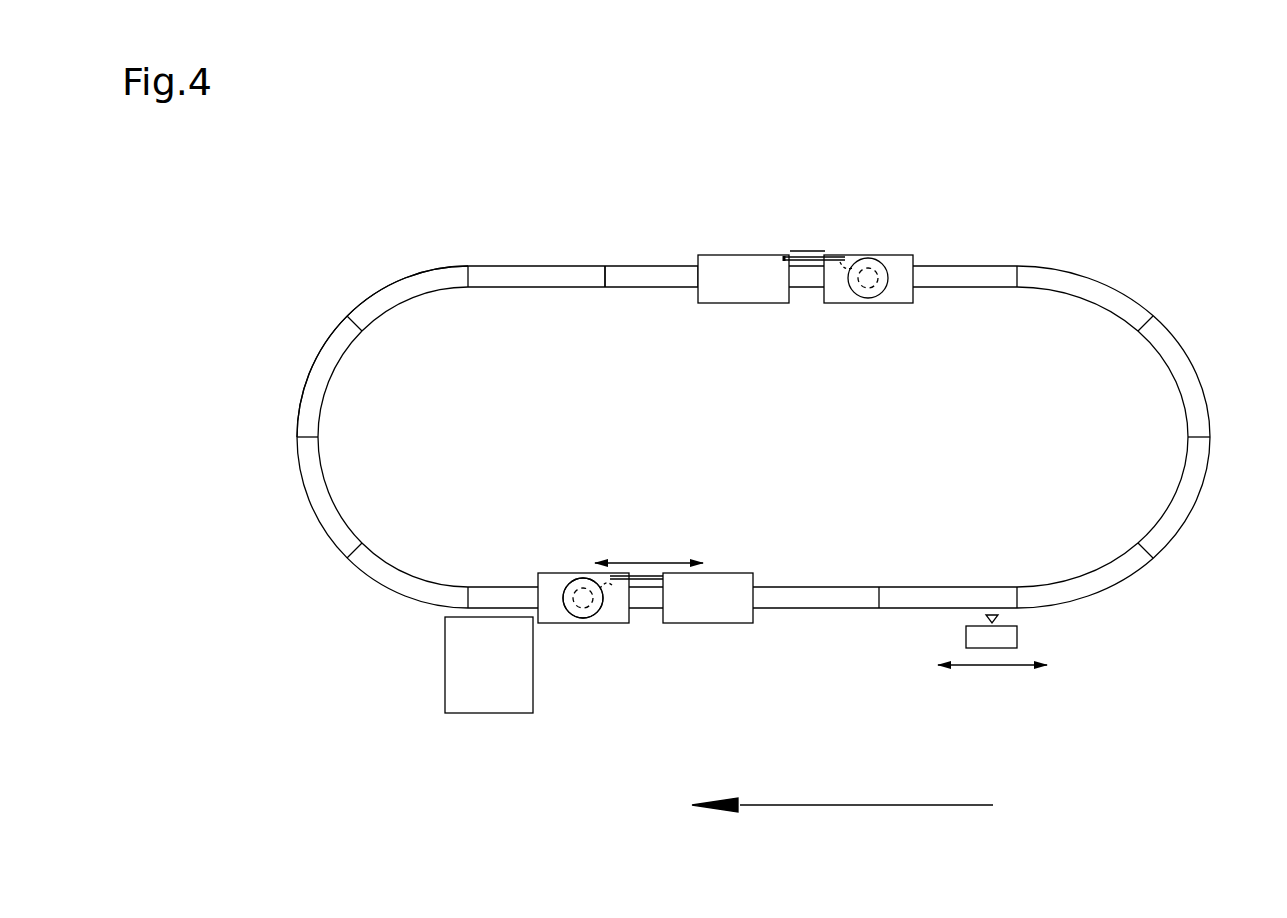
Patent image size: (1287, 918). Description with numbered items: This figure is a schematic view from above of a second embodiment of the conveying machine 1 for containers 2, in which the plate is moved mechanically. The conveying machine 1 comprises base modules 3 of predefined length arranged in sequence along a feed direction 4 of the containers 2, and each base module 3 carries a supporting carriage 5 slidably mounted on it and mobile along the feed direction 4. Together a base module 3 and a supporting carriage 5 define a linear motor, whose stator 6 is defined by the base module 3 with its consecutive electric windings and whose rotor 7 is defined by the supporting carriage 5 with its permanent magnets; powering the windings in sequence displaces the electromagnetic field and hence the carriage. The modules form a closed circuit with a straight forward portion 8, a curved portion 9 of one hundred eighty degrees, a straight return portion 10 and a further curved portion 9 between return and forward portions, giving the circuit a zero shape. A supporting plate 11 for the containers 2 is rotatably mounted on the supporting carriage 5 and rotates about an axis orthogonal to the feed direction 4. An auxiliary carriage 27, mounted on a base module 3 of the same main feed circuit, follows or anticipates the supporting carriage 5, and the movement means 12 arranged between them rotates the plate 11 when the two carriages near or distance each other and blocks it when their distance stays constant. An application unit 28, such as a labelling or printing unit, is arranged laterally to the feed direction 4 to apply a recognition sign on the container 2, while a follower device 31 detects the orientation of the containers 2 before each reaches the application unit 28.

The conveying machine 1 is at (759, 426).
The container 2 is at (902, 560).
The base module 3 is at (946, 265).
The feed direction 4 is at (837, 805).
The supporting carriage 5 is at (615, 617).
The stator 6 is at (481, 246).
The rotor 7 is at (1128, 603).
The straight forward portion 8 is at (846, 618).
The curved portion 9 is at (328, 335).
The straight return portion 10 is at (646, 246).
The supporting plate 11 is at (588, 617).
The movement means 12 is at (582, 578).
The auxiliary carriage 27 is at (730, 612).
The application unit 28 is at (524, 683).
The follower device 31 is at (1008, 636).